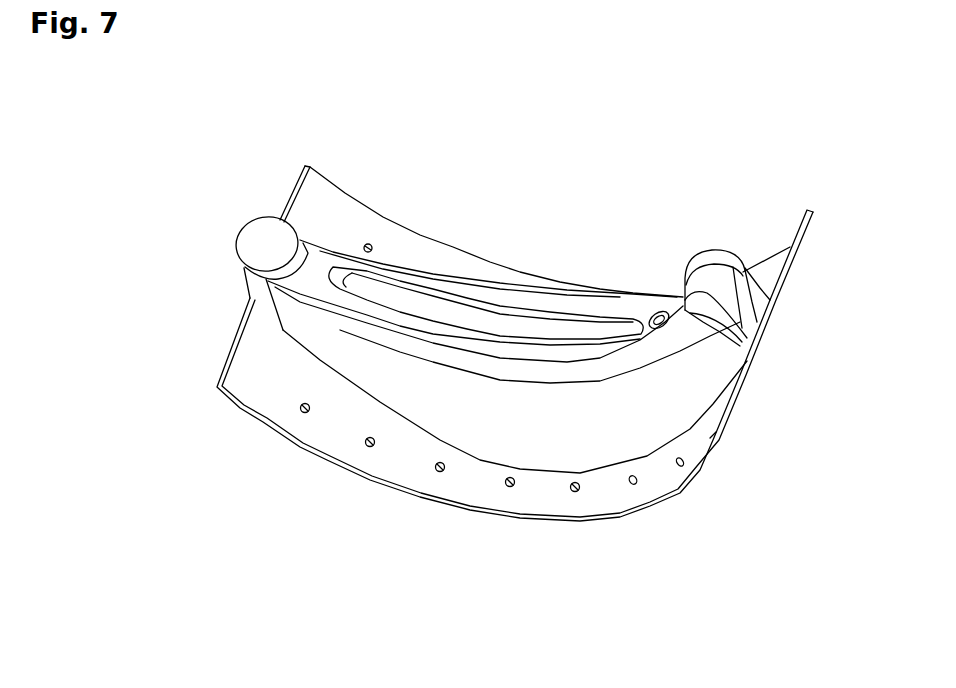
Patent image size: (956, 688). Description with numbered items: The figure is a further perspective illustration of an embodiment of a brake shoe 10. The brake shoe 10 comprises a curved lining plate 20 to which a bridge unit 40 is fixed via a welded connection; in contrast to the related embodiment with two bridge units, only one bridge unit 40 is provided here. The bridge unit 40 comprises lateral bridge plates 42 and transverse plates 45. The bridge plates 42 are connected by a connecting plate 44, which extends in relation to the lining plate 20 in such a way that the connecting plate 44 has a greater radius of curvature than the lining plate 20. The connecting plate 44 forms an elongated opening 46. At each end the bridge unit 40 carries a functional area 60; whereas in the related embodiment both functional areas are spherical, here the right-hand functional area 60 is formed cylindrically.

The brake shoe 10 is at (556, 205).
The lining plate 20 is at (328, 442).
The bridge unit 40 is at (543, 447).
The bridge plate 42 is at (504, 332).
The connecting plate 44 is at (437, 288).
The transverse plate 45 is at (750, 300).
The elongated opening 46 is at (573, 333).
The functional area 60 is at (257, 237).